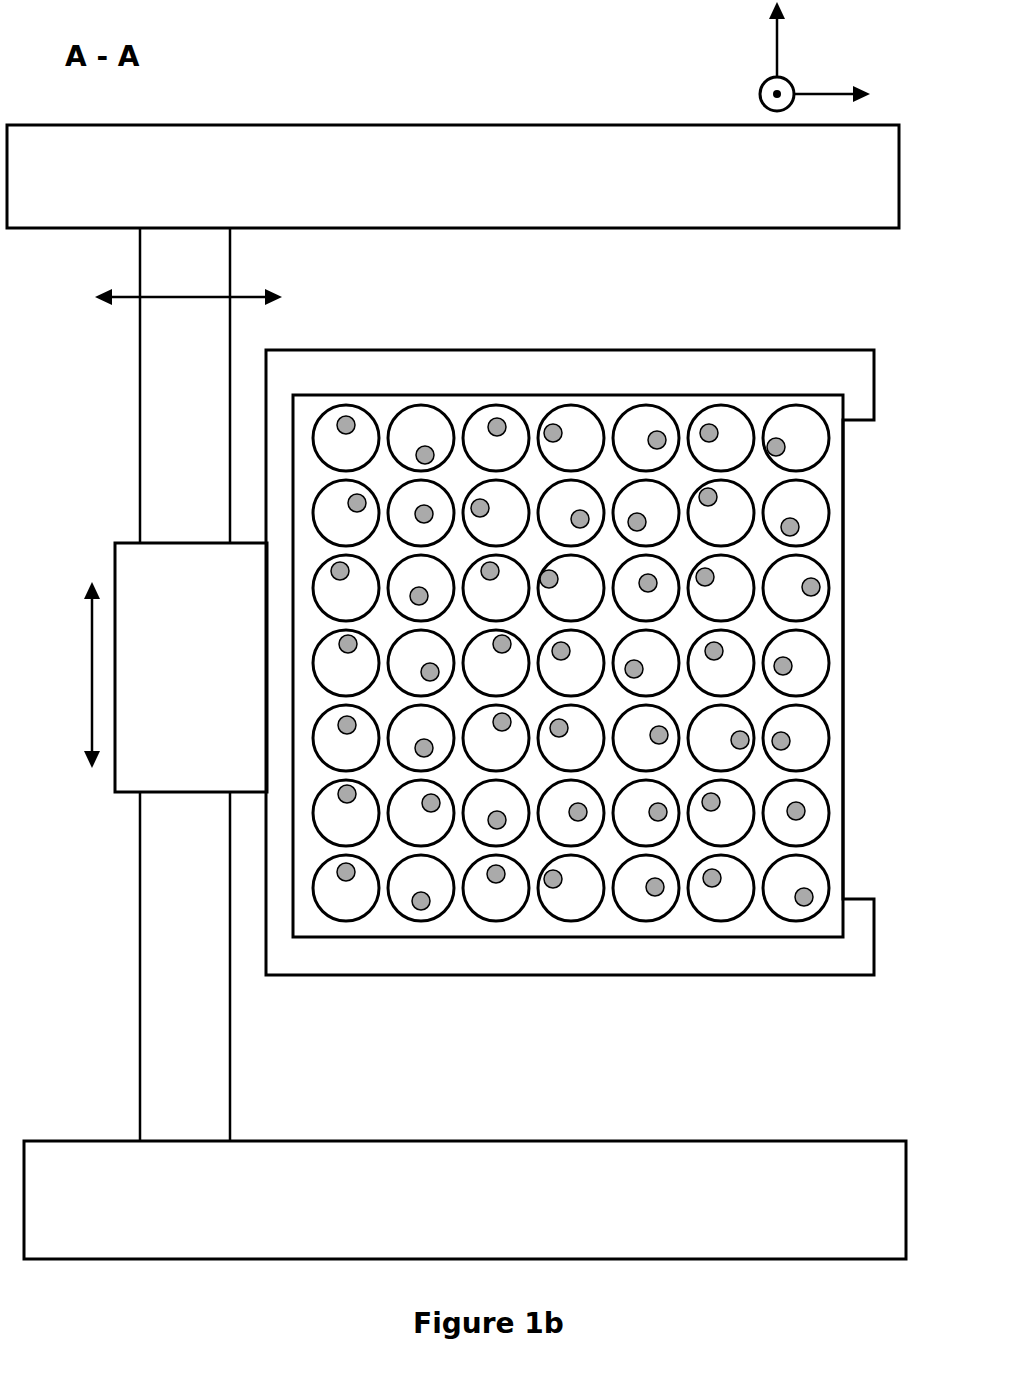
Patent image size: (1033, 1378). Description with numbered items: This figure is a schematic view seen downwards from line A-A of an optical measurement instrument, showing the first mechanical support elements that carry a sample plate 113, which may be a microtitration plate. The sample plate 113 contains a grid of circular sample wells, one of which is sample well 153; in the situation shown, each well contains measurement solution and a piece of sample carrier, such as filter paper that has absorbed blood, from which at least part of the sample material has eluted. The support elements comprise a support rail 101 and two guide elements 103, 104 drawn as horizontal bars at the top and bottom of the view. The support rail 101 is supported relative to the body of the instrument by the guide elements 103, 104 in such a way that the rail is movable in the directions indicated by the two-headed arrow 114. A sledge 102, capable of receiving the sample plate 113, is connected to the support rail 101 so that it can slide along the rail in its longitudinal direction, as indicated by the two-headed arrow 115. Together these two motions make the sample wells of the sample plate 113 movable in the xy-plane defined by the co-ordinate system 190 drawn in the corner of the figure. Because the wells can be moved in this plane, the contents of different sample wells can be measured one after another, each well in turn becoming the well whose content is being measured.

The support rail 101 is at (164, 480).
The sledge 102 is at (162, 678).
The guide element 103 is at (438, 171).
The guide element 104 is at (438, 1215).
The sample plate 113 is at (455, 410).
The two-headed arrow 114 is at (128, 300).
The two-headed arrow 115 is at (90, 676).
The sample well 153 is at (479, 681).
The co-ordinate system 190 is at (806, 34).